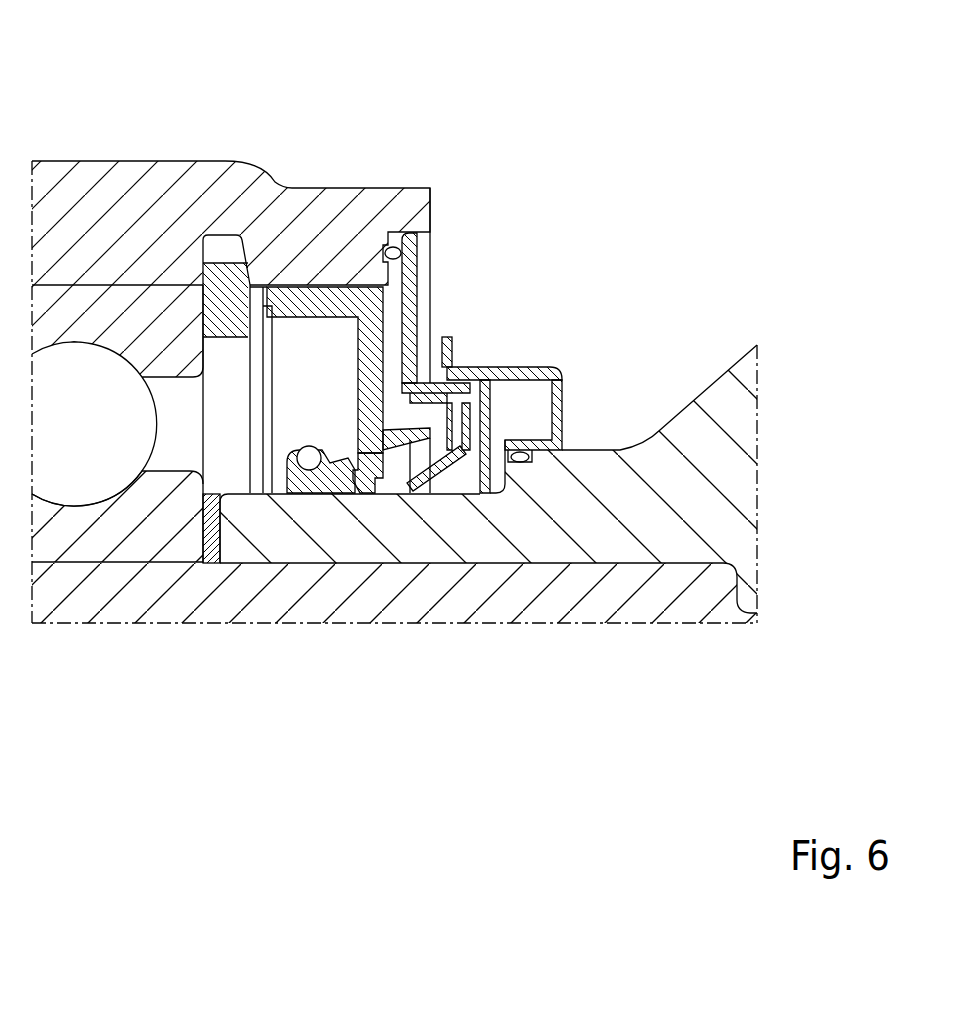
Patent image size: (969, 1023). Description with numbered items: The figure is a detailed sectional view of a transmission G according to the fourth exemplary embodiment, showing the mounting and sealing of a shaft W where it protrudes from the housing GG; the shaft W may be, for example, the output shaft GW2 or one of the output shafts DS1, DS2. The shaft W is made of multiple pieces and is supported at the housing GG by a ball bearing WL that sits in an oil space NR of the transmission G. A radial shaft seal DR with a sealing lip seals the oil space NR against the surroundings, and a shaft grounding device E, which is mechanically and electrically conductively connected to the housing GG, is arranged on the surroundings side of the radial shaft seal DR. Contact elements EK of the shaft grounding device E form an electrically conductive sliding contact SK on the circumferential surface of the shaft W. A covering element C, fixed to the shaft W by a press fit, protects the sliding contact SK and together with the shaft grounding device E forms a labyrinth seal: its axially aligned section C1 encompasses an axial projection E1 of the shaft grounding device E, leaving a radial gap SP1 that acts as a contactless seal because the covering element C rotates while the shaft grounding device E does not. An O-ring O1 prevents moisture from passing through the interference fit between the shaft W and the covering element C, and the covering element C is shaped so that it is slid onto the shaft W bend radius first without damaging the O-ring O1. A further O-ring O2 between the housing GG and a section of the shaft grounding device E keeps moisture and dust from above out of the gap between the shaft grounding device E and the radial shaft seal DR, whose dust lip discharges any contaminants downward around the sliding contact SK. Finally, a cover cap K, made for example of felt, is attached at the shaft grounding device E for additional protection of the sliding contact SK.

The ball bearing WL is at (95, 330).
The housing GG is at (277, 252).
The shaft grounding device E is at (390, 282).
The O-ring O2 is at (390, 232).
The radial shaft seal DR is at (368, 358).
The axial projection E1 is at (458, 373).
The radial gap SP1 is at (487, 372).
The transmission G is at (642, 215).
The axially aligned section C1 is at (540, 365).
The covering element C is at (575, 384).
The cover cap K is at (490, 408).
The oil space NR is at (185, 430).
The shaft W is at (394, 586).
The output shaft GW2 is at (394, 593).
The output shaft DS1 is at (394, 593).
The output shaft DS2 is at (394, 593).
The sliding contact SK is at (413, 525).
The contact elements EK is at (462, 494).
The O-ring O1 is at (530, 478).